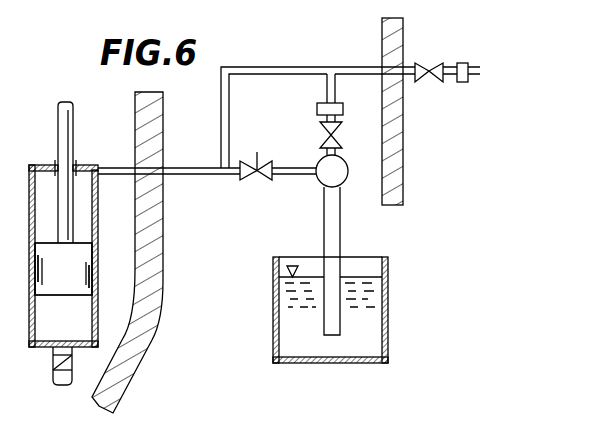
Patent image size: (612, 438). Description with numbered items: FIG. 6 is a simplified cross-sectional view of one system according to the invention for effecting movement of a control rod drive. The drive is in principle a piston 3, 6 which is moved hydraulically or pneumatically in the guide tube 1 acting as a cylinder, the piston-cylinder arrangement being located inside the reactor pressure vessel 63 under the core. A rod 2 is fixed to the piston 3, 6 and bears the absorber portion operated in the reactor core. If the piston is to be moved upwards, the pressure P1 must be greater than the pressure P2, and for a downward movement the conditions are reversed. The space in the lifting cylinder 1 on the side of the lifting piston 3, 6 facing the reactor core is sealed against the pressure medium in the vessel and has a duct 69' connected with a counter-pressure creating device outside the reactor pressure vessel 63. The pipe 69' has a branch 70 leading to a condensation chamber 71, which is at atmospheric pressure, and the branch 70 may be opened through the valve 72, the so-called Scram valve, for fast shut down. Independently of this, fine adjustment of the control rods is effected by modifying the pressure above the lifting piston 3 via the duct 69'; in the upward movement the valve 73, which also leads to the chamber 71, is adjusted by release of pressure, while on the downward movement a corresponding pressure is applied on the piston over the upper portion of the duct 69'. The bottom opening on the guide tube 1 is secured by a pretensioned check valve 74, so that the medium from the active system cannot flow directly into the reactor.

The guide tube 1 is at (97, 229).
The rod 2 is at (58, 138).
The piston 3 is at (80, 273).
The piston 6 is at (80, 273).
The reactor pressure vessel 63 is at (156, 289).
The duct 69' is at (336, 115).
The branch 70 is at (236, 178).
The condensation chamber 71 is at (381, 320).
The Scram valve 72 is at (263, 178).
The valve 73 is at (334, 133).
The pretensioned check valve 74 is at (73, 361).
The pressure P1 is at (52, 315).
The pressure P2 is at (80, 238).